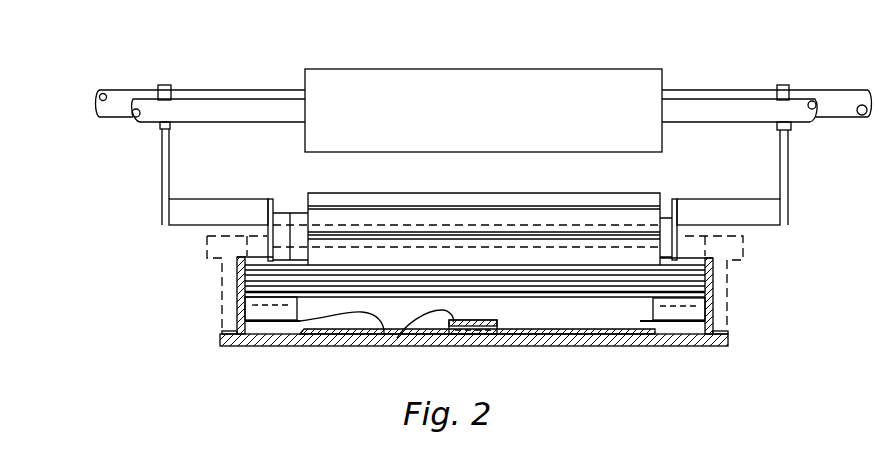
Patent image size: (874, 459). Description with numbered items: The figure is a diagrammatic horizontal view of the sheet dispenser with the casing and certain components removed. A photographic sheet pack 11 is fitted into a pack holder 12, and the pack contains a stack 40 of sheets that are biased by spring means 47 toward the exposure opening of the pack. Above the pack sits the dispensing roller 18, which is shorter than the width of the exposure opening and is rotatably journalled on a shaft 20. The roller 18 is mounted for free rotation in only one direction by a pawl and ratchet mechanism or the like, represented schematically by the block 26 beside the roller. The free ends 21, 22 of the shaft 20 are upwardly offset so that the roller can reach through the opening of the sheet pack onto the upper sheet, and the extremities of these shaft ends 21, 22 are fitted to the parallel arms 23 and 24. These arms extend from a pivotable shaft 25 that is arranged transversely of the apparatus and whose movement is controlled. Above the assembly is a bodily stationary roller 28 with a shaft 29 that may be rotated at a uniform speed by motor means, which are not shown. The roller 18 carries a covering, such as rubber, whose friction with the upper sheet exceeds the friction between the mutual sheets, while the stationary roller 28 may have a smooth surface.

The photographic sheet pack 11 is at (238, 283).
The pack holder 12 is at (220, 246).
The roller 18 is at (387, 213).
The shaft 20 is at (510, 240).
The shaft end 21 is at (708, 213).
The shaft end 22 is at (208, 213).
The arm 23 is at (788, 168).
The arm 24 is at (162, 164).
The pivotable shaft 25 is at (687, 97).
The block 26 is at (300, 220).
The stationary roller 28 is at (463, 85).
The shaft 29 is at (238, 110).
The stack of sheets 40 is at (574, 277).
The spring means 47 is at (397, 338).